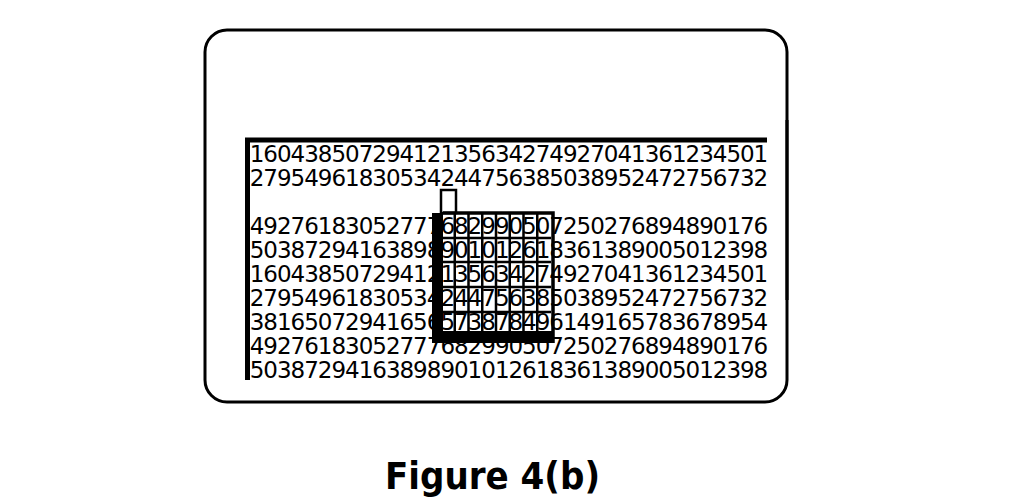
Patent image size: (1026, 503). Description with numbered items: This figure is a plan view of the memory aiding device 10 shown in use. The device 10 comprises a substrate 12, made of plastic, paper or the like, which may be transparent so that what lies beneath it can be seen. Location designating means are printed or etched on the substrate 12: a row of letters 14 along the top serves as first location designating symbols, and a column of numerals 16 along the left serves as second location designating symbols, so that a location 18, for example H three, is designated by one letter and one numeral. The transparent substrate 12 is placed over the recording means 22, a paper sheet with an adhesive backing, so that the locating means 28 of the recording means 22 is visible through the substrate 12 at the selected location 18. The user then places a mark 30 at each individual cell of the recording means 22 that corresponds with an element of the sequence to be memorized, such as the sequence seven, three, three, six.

The memory aiding device 10 is at (830, 82).
The substrate 12 is at (787, 192).
The letters 14 is at (268, 120).
The numerals 16 is at (218, 177).
The locating means 28 is at (250, 198).
The location 18 is at (432, 222).
The recording means 22 is at (553, 255).
The mark 30 is at (436, 334).